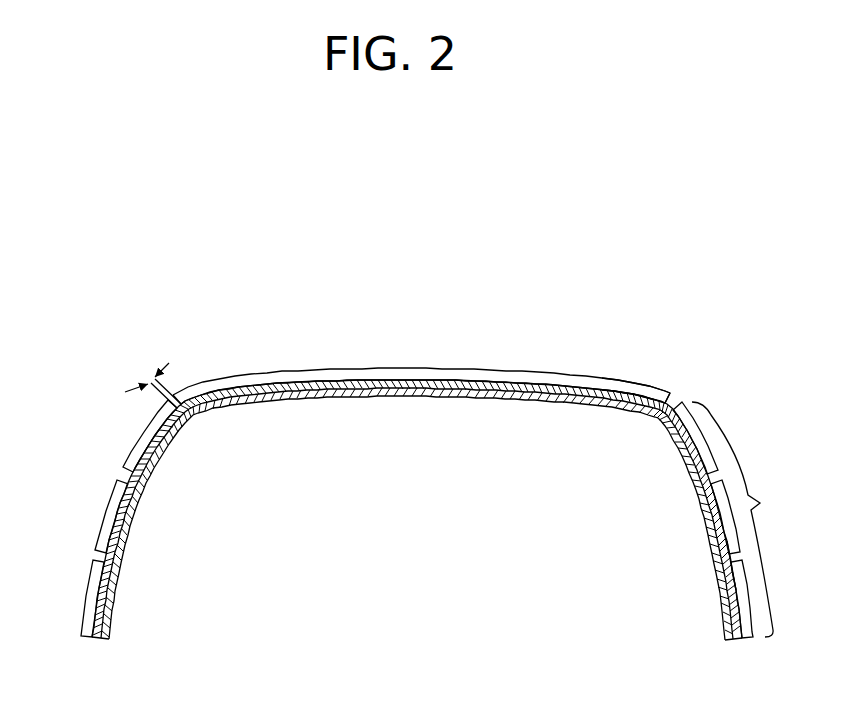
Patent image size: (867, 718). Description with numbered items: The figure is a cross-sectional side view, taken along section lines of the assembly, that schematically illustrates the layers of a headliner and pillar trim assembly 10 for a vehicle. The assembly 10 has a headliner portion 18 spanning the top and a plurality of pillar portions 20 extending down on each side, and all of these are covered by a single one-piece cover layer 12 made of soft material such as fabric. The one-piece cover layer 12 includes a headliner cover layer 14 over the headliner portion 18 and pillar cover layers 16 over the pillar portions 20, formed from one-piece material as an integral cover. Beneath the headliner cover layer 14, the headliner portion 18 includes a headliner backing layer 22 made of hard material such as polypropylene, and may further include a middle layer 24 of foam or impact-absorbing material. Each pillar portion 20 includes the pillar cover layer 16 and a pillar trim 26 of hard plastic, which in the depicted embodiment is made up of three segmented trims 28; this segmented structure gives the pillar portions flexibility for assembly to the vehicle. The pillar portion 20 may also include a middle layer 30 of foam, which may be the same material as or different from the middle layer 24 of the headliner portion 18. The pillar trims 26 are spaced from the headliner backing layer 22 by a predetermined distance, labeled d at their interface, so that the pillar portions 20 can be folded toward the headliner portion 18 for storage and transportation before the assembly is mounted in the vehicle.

The headliner and pillar trim assembly 10 is at (575, 300).
The one-piece cover layer 12 is at (436, 406).
The headliner cover layer 14 is at (345, 399).
The pillar cover layer 16 is at (127, 542).
The headliner portion 18 is at (401, 364).
The pillar portion 20 is at (149, 483).
The headliner backing layer 22 is at (483, 375).
The middle layer 24 is at (618, 394).
The pillar trim 26 is at (740, 519).
The segmented trims 28 is at (103, 510).
The middle layer 30 is at (145, 438).